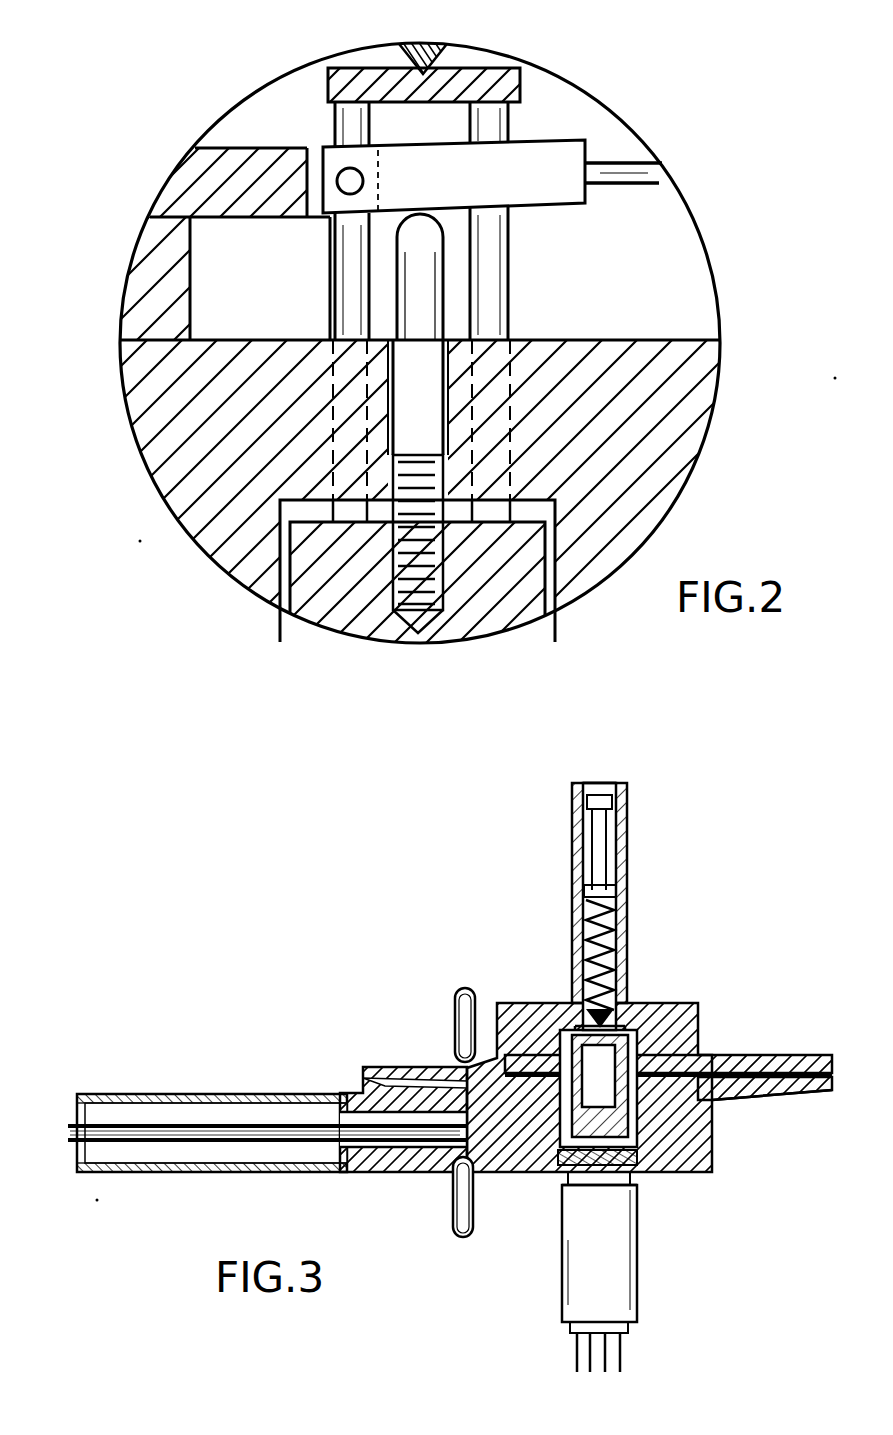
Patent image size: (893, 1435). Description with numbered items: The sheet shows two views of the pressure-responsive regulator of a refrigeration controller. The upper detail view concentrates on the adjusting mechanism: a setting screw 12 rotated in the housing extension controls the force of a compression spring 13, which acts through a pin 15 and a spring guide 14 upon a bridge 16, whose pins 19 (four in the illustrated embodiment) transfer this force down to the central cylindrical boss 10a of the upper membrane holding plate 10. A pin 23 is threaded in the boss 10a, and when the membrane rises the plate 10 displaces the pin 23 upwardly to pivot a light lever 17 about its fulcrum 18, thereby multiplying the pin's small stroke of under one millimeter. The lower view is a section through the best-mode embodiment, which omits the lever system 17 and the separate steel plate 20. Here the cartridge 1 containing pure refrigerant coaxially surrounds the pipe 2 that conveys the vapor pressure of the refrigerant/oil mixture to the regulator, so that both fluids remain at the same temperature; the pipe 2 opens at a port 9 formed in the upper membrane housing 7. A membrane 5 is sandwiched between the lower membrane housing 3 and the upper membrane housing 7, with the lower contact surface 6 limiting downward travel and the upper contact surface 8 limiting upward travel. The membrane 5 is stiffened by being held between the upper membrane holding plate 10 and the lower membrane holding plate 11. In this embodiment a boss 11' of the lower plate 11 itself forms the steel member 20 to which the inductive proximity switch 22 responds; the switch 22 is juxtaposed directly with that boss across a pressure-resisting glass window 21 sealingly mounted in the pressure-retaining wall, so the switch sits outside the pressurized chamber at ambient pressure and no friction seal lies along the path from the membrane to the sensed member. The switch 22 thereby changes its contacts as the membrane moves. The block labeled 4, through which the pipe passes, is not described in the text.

In FIG. 3, the cartridge 1 is at (185, 1120).
In FIG. 3, the pipe 2 is at (72, 1140).
In FIG. 3, the lower membrane housing 3 is at (695, 1150).
In FIG. 3, the tube holder block 4 is at (385, 1110).
In FIG. 3, the membrane 5 is at (718, 1058).
In FIG. 3, the lower contact surface 6 is at (738, 1097).
In FIG. 3, the upper membrane housing 7 is at (665, 1020).
In FIG. 3, the upper contact surface 8 is at (760, 1072).
In FIG. 3, the port 9 is at (453, 1040).
In FIG. 3, the upper membrane holding plate 10 is at (535, 1055).
In FIG. 2, the central cylindrical boss 10a is at (300, 565).
In FIG. 3, the lower membrane holding plate 11 is at (570, 1133).
In FIG. 3, the boss 11' is at (672, 1150).
In FIG. 3, the setting screw 12 is at (596, 852).
In FIG. 3, the compression spring 13 is at (612, 948).
In FIG. 3, the spring guide 14 is at (583, 1025).
In FIG. 2, the pin 15 is at (442, 46).
In FIG. 2, the bridge 16 is at (480, 80).
In FIG. 2, the lever 17 is at (568, 148).
In FIG. 2, the fulcrum 18 is at (340, 178).
In FIG. 2, the pins 19 is at (500, 262).
In FIG. 3, the ferromagnetic plate 20 is at (635, 1186).
In FIG. 3, the pressure resisting window 21 is at (583, 1186).
In FIG. 3, the inductive proximity switch 22 is at (625, 1277).
In FIG. 2, the pin 23 is at (420, 300).